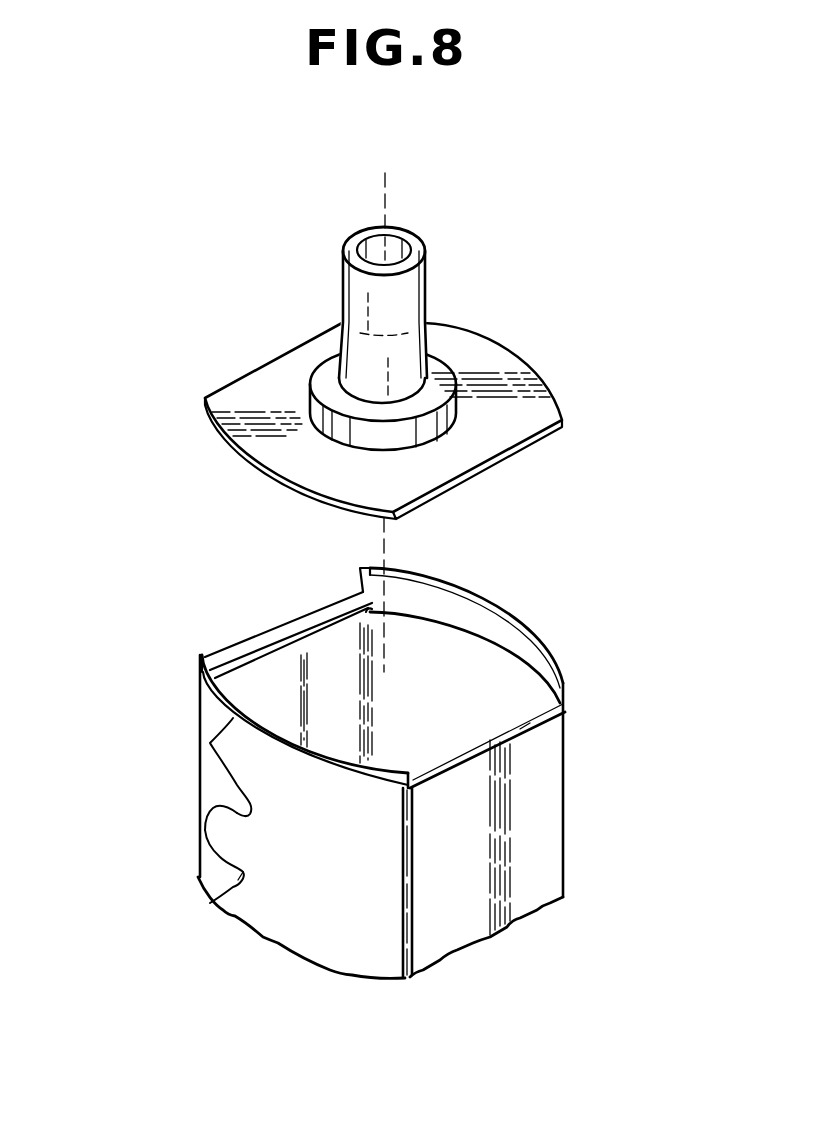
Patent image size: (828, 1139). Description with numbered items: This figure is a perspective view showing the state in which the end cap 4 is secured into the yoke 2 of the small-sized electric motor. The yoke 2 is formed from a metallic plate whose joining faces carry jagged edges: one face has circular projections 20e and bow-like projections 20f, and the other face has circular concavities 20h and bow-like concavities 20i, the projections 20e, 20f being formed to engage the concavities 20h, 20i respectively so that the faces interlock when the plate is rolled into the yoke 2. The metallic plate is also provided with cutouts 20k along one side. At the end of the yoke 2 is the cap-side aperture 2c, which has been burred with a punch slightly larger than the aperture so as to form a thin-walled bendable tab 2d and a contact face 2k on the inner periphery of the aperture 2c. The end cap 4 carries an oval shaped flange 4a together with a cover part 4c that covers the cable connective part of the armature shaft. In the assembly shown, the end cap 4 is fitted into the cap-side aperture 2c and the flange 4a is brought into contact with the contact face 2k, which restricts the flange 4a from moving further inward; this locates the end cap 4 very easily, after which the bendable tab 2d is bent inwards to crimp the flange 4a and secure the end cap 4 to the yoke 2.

The yoke 2 is at (557, 830).
The cap-side aperture 2c is at (500, 685).
The bendable tab 2d is at (518, 614).
The contact face 2k is at (458, 627).
The end cap 4 is at (468, 334).
The flange 4a is at (515, 372).
The cover part 4c is at (418, 252).
The circular projections 20e is at (223, 835).
The bow-like projections 20f is at (208, 742).
The circular concavities 20h is at (207, 820).
The bow-like concavities 20i is at (212, 777).
The cutouts 20k is at (523, 723).